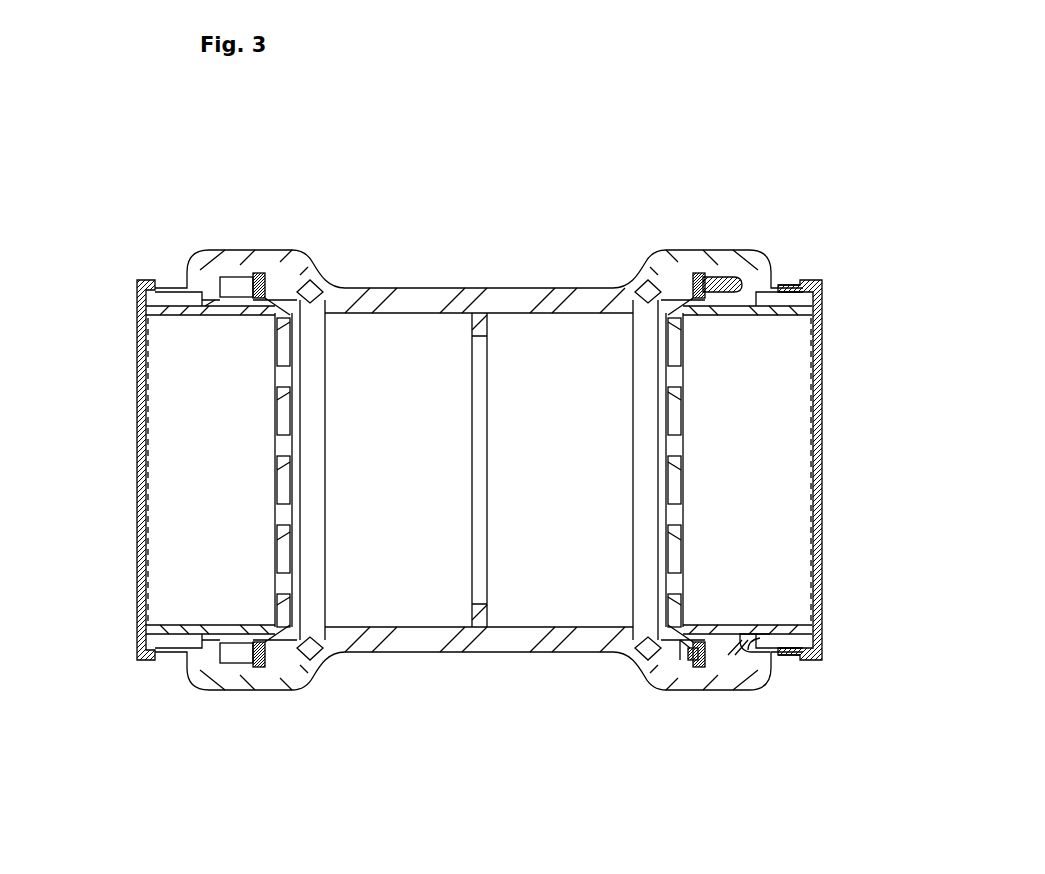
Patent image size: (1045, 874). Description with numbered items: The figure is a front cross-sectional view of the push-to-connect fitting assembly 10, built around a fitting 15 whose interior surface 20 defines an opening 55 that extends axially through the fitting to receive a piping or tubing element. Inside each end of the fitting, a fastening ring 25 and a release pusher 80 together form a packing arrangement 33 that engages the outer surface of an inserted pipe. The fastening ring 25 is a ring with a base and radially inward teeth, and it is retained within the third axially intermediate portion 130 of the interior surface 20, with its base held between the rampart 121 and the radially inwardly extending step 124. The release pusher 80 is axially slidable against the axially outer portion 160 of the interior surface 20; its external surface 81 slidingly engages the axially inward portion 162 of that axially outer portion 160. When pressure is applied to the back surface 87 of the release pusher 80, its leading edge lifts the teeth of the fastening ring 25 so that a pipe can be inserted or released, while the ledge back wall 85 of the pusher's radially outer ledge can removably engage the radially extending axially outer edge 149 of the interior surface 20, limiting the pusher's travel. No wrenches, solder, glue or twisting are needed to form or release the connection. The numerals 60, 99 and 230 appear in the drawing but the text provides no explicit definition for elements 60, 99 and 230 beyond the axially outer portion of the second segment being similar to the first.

The push-to-connect fitting assembly 10 is at (742, 128).
The fitting 15 is at (430, 292).
The interior surface 20 is at (413, 620).
The fastening ring 25 is at (266, 660).
The packing arrangement 33 is at (242, 372).
The opening 55 is at (84, 460).
The divider wall 60 is at (478, 618).
The release pusher 80 is at (810, 477).
The external surface 81 is at (781, 284).
The ledge back wall 85 is at (743, 654).
The back surface 87 is at (824, 304).
The left retainer cap 99 is at (150, 286).
The rampart 121 is at (688, 658).
The radially inwardly extending step 124 is at (690, 653).
The third axially intermediate portion 130 is at (697, 272).
The radially extending axially outer edge 149 is at (742, 660).
The axially outer portion 160 is at (782, 660).
The axially inward portion 162 is at (750, 282).
The left hub 230 is at (263, 272).